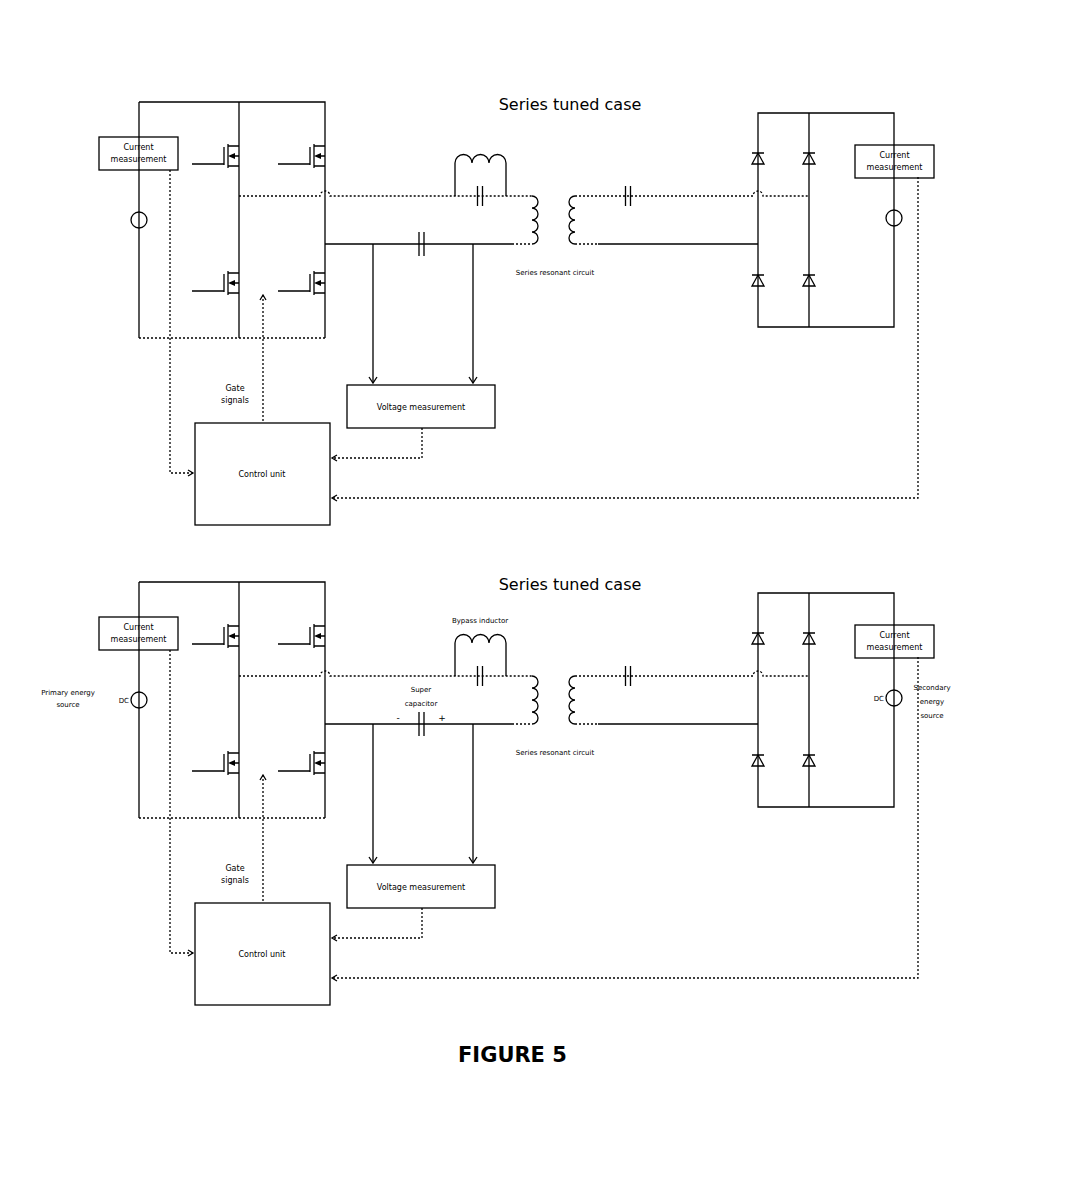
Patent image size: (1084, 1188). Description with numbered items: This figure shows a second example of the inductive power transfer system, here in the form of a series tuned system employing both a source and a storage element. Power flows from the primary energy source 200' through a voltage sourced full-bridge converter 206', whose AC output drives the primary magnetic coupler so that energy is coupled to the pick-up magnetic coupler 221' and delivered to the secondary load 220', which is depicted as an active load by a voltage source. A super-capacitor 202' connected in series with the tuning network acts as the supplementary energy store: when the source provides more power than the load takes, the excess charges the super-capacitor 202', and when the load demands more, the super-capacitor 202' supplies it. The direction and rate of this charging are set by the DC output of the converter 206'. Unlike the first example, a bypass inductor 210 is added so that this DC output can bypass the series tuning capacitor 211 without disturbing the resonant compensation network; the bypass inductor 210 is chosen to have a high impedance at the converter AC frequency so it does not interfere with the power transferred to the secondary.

The converter 206' is at (264, 172).
The primary energy source 200' is at (94, 241).
The super-capacitor 202' is at (385, 175).
The bypass inductor 210 is at (462, 114).
The series tuning capacitor 211 is at (498, 182).
The pick-up magnetic coupler 221' is at (692, 147).
The secondary load 220' is at (920, 270).